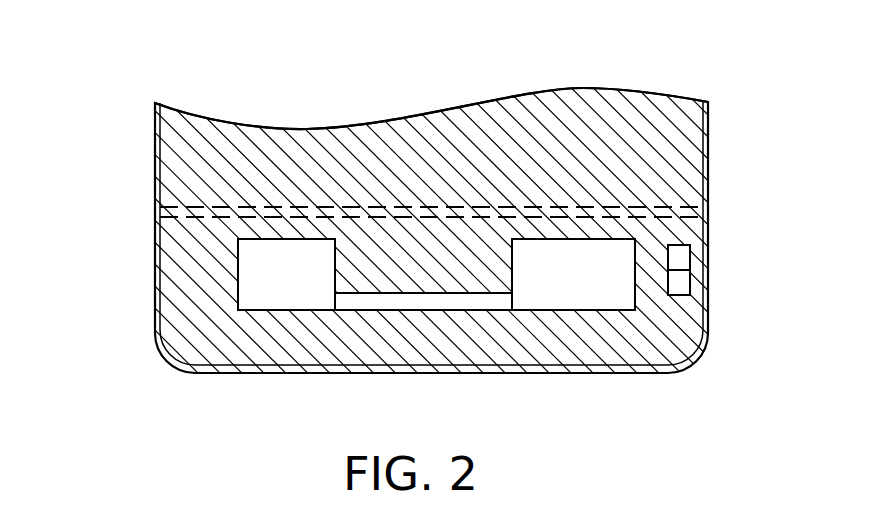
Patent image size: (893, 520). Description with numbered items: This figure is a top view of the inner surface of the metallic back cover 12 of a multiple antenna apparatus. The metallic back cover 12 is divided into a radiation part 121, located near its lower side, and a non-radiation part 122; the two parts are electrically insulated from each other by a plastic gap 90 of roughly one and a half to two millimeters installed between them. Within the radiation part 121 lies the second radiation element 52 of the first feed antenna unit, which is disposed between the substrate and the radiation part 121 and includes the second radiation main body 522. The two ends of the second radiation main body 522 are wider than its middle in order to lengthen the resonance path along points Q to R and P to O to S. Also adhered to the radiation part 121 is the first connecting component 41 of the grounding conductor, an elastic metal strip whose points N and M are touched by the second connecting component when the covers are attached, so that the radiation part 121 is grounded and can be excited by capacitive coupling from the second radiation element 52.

The metallic back cover 12 is at (168, 77).
The non-radiation part 122 is at (157, 160).
The radiation part 121 is at (157, 281).
The plastic gap 90 is at (682, 208).
The second radiation element 52 is at (368, 278).
The second radiation main body 522 is at (398, 298).
The first connecting component 41 is at (690, 270).